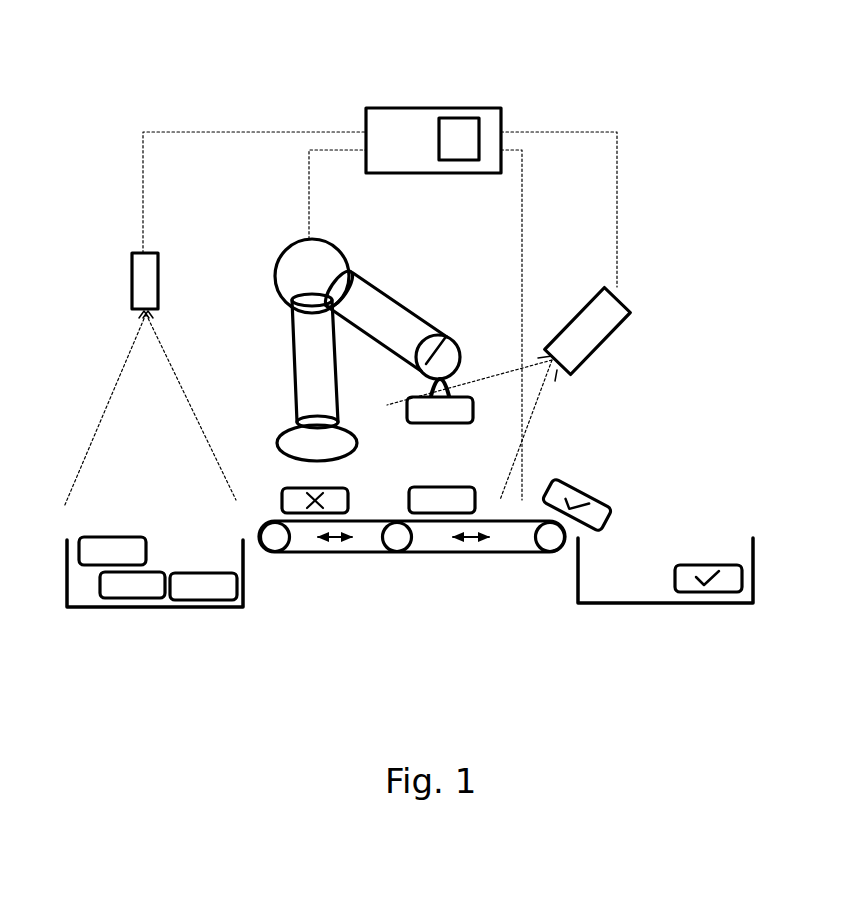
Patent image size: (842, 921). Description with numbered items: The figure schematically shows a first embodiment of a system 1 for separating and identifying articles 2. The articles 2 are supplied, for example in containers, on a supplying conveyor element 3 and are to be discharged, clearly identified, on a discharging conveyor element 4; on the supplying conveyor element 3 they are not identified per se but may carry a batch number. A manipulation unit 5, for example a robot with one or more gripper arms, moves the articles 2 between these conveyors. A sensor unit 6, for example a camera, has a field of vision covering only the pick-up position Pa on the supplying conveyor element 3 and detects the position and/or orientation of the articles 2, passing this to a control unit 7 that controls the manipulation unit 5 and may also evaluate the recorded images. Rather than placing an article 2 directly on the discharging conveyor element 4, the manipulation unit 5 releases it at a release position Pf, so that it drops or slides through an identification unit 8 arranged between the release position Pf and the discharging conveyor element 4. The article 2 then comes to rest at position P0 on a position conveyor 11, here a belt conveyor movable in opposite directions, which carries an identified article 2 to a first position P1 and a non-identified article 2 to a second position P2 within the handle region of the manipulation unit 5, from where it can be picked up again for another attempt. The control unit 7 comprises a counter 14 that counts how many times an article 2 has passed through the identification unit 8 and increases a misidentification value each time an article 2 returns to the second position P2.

The system 1 is at (138, 75).
The article 2 is at (205, 590).
The supplying conveyor element 3 is at (220, 608).
The discharging conveyor element 4 is at (605, 603).
The manipulation unit 5 is at (280, 258).
The sensor unit 6 is at (133, 252).
The control unit 7 is at (430, 108).
The identification unit 8 is at (630, 312).
The position conveyor 11 is at (443, 553).
The counter 14 is at (458, 135).
The pick-up position Pa is at (165, 507).
The position P0 is at (440, 473).
The first position P1 is at (562, 461).
The second position P2 is at (269, 472).
The release position Pf is at (478, 370).